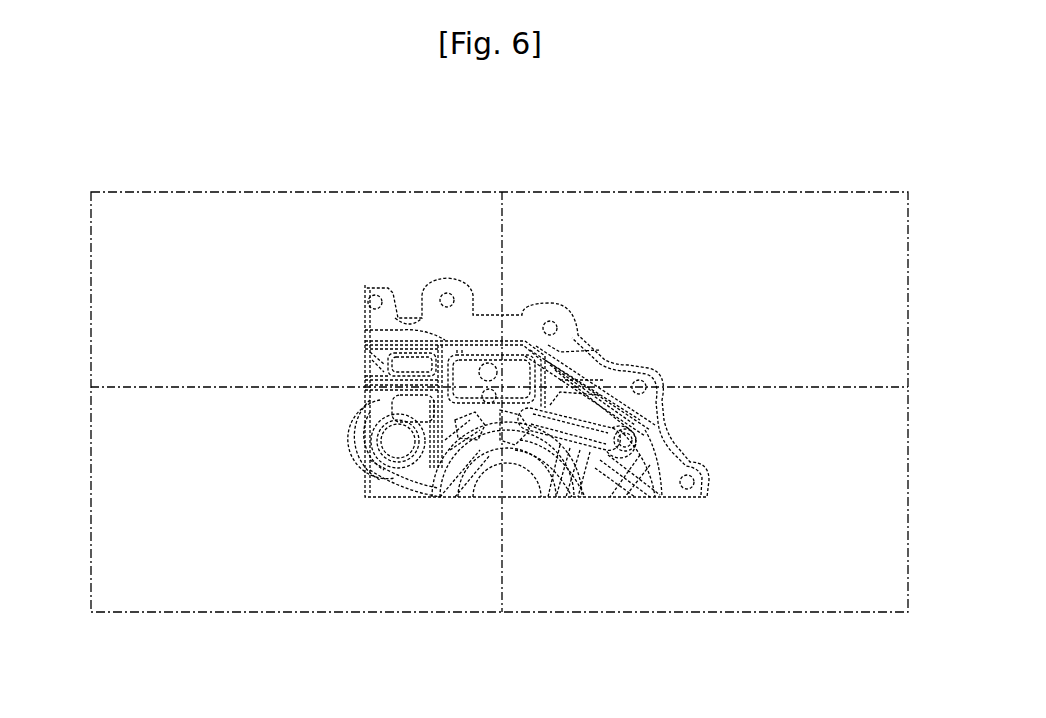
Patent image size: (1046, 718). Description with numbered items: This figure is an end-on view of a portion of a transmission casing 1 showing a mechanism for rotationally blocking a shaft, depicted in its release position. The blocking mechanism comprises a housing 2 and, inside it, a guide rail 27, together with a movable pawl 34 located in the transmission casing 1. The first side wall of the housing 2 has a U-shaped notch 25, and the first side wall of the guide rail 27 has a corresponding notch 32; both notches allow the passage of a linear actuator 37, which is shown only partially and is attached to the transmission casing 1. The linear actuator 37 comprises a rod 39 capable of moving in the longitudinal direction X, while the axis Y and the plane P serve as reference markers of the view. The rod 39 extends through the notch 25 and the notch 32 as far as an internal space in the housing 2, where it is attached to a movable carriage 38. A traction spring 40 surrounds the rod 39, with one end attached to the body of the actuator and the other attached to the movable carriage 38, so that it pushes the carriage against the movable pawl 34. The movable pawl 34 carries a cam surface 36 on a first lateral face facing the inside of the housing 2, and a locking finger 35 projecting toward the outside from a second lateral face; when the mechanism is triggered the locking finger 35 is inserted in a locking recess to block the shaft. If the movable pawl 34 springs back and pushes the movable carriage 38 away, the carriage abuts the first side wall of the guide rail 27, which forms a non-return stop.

The transmission casing 1 is at (622, 350).
The housing 2 is at (533, 312).
The notch 25 is at (428, 350).
The guide rail 27 is at (598, 356).
The notch 32 is at (455, 350).
The movable pawl 34 is at (590, 468).
The locking finger 35 is at (522, 458).
The cam surface 36 is at (548, 380).
The linear actuator 37 is at (382, 402).
The movable carriage 38 is at (467, 352).
The rod 39 is at (392, 345).
The traction spring 40 is at (362, 325).
The projection plane P is at (273, 191).
The longitudinal direction X is at (216, 386).
The Y axis Y is at (501, 549).